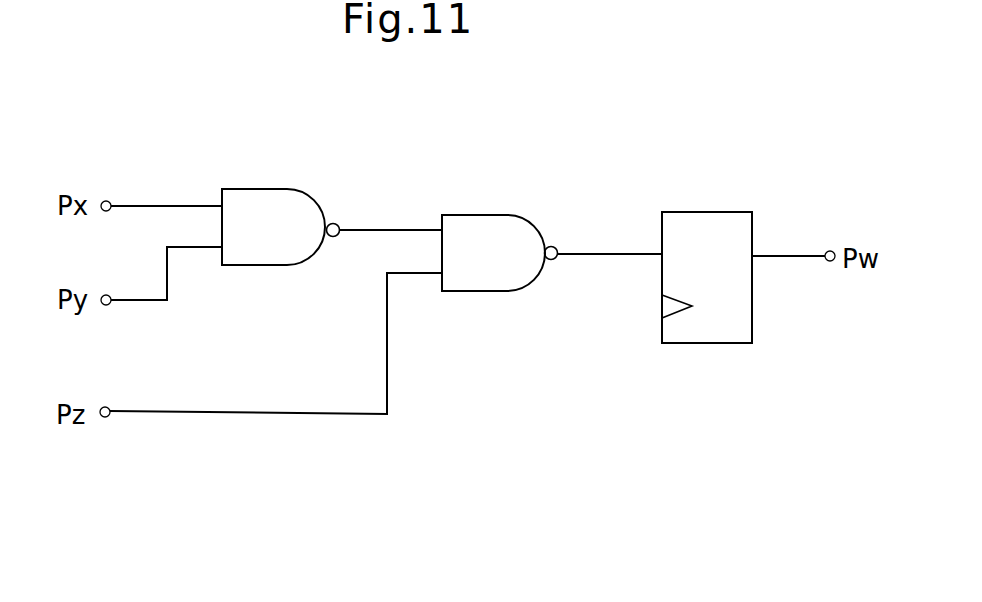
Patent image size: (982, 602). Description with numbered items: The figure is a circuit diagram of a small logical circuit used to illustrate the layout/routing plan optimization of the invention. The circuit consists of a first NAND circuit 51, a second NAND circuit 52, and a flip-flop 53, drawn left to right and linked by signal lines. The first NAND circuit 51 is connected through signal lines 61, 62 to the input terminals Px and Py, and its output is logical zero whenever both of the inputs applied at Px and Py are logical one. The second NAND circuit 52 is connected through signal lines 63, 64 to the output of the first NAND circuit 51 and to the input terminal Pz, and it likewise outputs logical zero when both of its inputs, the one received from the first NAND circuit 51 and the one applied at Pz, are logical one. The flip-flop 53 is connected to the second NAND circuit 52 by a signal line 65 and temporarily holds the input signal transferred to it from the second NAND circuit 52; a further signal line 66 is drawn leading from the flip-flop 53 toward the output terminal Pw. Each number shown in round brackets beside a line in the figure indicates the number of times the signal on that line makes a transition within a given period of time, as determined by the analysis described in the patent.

The first NAND circuit 51 is at (262, 189).
The second NAND circuit 52 is at (478, 215).
The flip-flop 53 is at (700, 212).
The signal line 61 is at (203, 206).
The signal line 62 is at (167, 280).
The signal line 63 is at (424, 230).
The signal line 64 is at (387, 367).
The signal line 65 is at (598, 258).
The output signal line Pw 66 is at (800, 262).